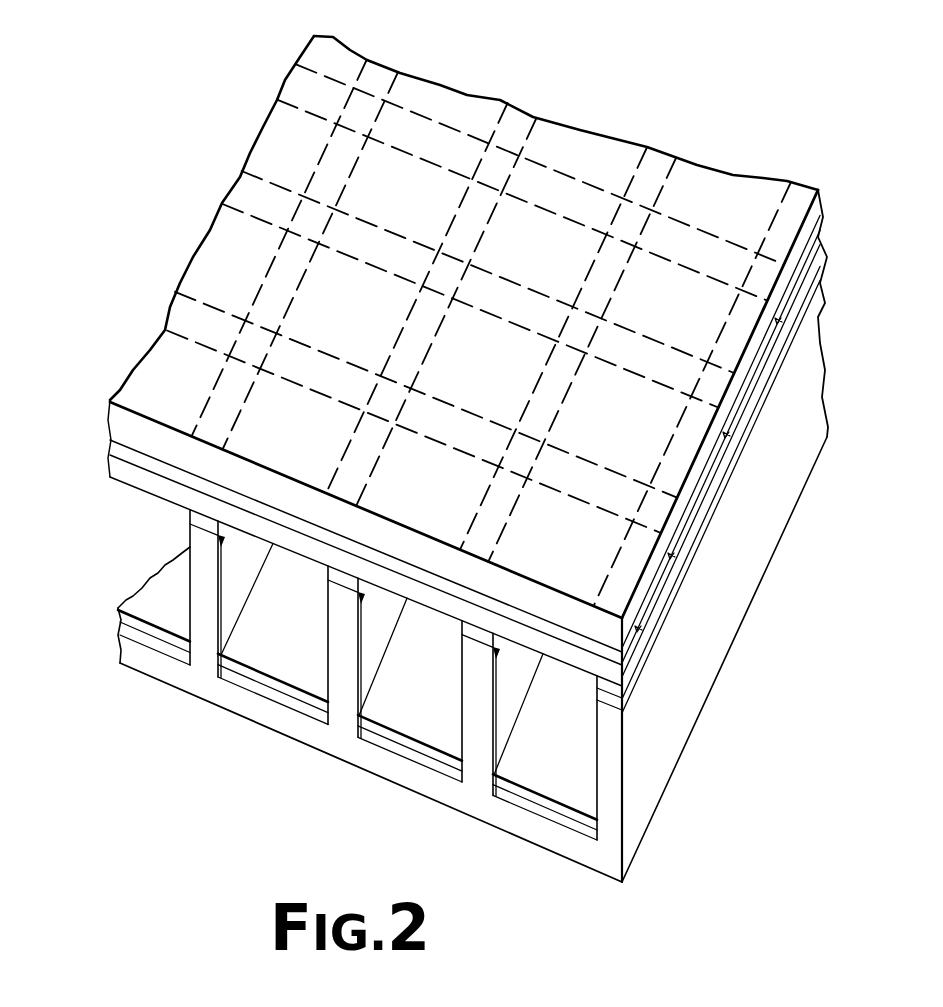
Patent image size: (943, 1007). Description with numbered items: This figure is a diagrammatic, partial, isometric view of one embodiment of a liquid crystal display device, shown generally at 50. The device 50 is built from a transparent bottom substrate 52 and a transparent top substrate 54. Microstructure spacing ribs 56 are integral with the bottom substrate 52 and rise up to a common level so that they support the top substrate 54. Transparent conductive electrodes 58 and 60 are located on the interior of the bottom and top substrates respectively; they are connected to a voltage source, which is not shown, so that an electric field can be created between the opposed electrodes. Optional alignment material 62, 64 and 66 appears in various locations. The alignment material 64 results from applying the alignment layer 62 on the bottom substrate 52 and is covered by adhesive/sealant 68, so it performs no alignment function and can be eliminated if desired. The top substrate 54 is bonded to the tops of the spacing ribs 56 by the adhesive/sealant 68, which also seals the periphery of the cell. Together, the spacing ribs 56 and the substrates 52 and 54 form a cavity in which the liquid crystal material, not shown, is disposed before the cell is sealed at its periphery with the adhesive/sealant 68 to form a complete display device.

The liquid crystal display device 50 is at (157, 230).
The transparent bottom substrate 52 is at (147, 665).
The transparent top substrate 54 is at (439, 361).
The microstructure spacing ribs 56 is at (330, 645).
The transparent conductive electrode 58 is at (285, 700).
The transparent conductive electrode 60 is at (698, 508).
The alignment layer 62 is at (240, 670).
The alignment material 64 is at (360, 586).
The alignment material 66 is at (721, 460).
The adhesive/sealant 68 is at (496, 646).